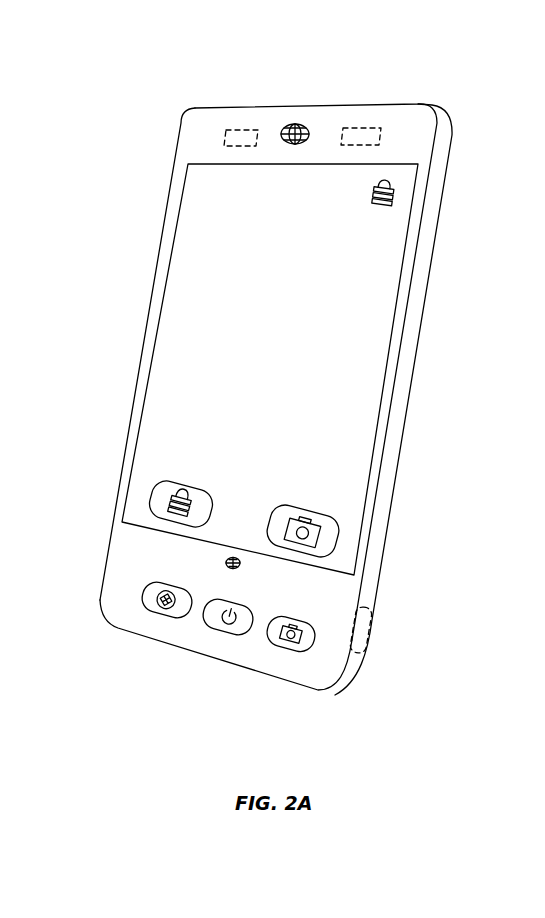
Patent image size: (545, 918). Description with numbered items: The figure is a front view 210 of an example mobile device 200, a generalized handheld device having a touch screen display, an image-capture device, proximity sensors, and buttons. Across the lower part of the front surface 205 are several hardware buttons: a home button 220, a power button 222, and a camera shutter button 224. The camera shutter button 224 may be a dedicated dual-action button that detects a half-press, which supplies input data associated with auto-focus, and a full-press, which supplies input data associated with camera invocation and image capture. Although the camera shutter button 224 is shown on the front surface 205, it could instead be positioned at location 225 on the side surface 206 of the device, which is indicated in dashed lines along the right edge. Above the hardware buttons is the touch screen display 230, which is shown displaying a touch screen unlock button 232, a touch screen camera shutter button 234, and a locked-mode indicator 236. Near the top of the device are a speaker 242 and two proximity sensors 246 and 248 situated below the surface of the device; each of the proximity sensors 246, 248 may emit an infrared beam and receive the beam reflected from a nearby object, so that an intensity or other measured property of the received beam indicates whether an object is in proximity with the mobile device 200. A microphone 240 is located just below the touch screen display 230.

The mobile device 200 is at (397, 103).
The front surface 205 is at (312, 668).
The side surface 206 is at (406, 410).
The front view 210 is at (124, 58).
The home button 220 is at (178, 612).
The power button 222 is at (240, 628).
The camera shutter button 224 is at (303, 647).
The location 225 is at (365, 628).
The touch screen display 230 is at (203, 265).
The touch screen unlock button 232 is at (157, 497).
The touch screen camera shutter button 234 is at (338, 532).
The locked-mode indicator 236 is at (395, 195).
The microphone 240 is at (240, 565).
The speaker 242 is at (292, 124).
The proximity sensor 246 is at (238, 131).
The proximity sensor 248 is at (357, 128).